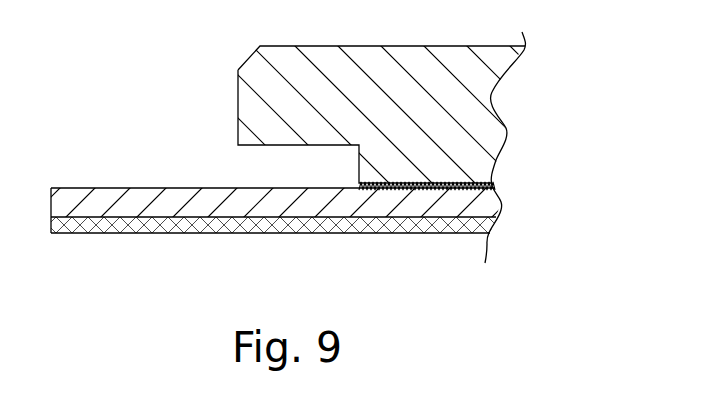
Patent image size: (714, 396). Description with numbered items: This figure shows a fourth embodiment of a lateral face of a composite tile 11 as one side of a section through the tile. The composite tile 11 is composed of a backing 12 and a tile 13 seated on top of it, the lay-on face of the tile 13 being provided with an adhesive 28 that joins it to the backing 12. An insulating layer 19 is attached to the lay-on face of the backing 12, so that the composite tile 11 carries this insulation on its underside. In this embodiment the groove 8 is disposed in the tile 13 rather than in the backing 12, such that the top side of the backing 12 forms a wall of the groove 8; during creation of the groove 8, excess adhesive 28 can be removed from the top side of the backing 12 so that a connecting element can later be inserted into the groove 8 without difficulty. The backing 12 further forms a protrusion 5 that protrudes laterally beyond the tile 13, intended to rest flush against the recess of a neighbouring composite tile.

The protrusion 5 is at (180, 203).
The groove 8 is at (318, 162).
The composite tile 11 is at (503, 95).
The backing 12 is at (487, 202).
The tile 13 is at (255, 103).
The insulating layer 19 is at (488, 226).
The adhesive 28 is at (493, 177).